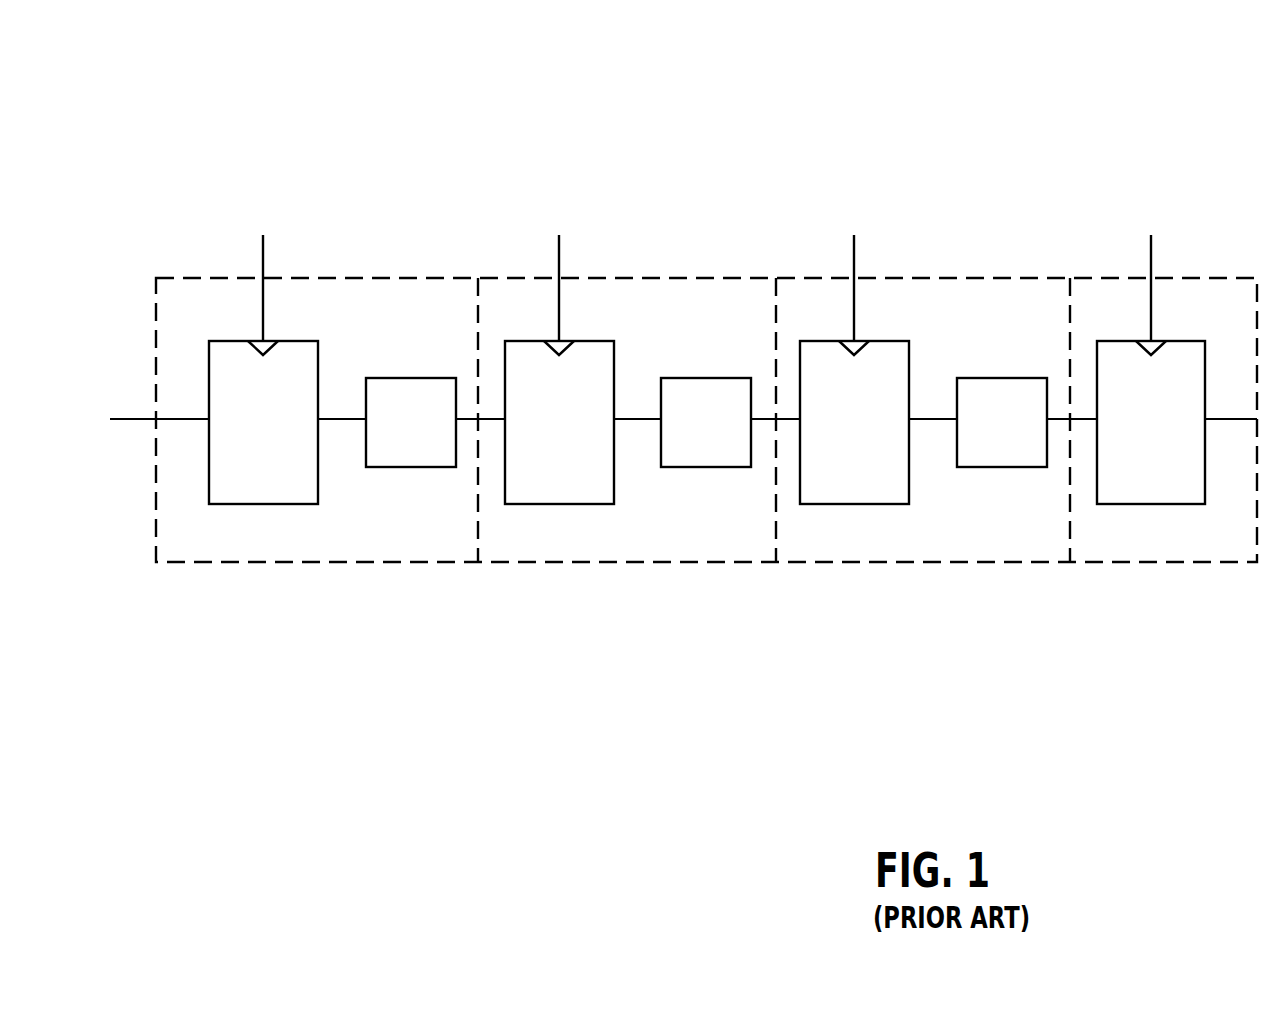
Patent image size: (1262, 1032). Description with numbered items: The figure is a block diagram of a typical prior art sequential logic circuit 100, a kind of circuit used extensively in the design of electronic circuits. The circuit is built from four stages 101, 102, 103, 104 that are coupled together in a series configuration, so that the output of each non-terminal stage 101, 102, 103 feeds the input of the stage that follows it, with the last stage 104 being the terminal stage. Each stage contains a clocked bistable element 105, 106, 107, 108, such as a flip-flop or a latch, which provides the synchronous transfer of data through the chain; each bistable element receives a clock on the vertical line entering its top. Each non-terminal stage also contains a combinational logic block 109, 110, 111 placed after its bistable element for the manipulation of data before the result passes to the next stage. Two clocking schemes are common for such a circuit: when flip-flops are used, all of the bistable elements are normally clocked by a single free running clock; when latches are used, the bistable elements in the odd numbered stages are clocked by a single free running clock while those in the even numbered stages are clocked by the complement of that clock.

The sequential logic circuit 100 is at (847, 119).
The stage 101 is at (383, 538).
The stage 102 is at (635, 538).
The stage 103 is at (934, 538).
The stage 104 is at (1162, 538).
The clocked bistable element 105 is at (302, 492).
The clocked bistable element 106 is at (598, 492).
The clocked bistable element 107 is at (893, 492).
The clocked bistable element 108 is at (1190, 492).
The combinational logic block 109 is at (442, 457).
The combinational logic block 110 is at (737, 457).
The combinational logic block 111 is at (1033, 457).